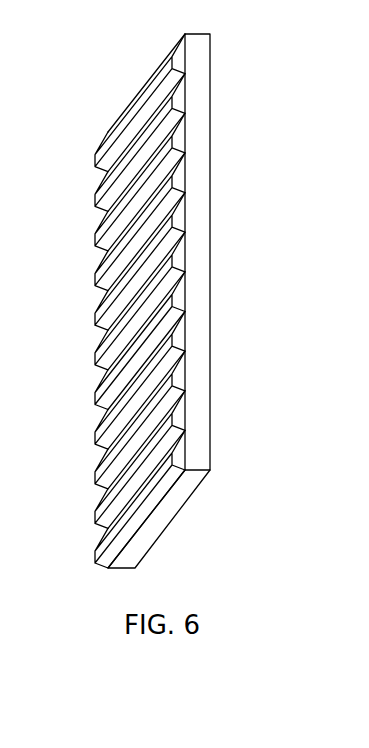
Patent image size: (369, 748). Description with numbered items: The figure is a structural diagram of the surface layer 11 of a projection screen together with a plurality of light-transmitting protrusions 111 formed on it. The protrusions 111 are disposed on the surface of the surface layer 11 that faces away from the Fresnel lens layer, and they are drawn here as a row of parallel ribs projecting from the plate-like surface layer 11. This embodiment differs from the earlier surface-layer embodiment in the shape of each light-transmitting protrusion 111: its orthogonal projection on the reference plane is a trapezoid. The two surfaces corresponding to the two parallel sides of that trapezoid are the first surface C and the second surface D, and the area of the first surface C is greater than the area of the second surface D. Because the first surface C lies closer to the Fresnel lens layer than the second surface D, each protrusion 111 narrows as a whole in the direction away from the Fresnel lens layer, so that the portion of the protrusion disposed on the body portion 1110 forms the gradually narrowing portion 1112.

The surface layer 11 is at (202, 175).
The light-transmitting protrusions 111 is at (167, 301).
The body portion 1110 is at (172, 334).
The gradually narrowing portion 1112 is at (172, 264).
The first surface C is at (185, 97).
The second surface D is at (110, 178).